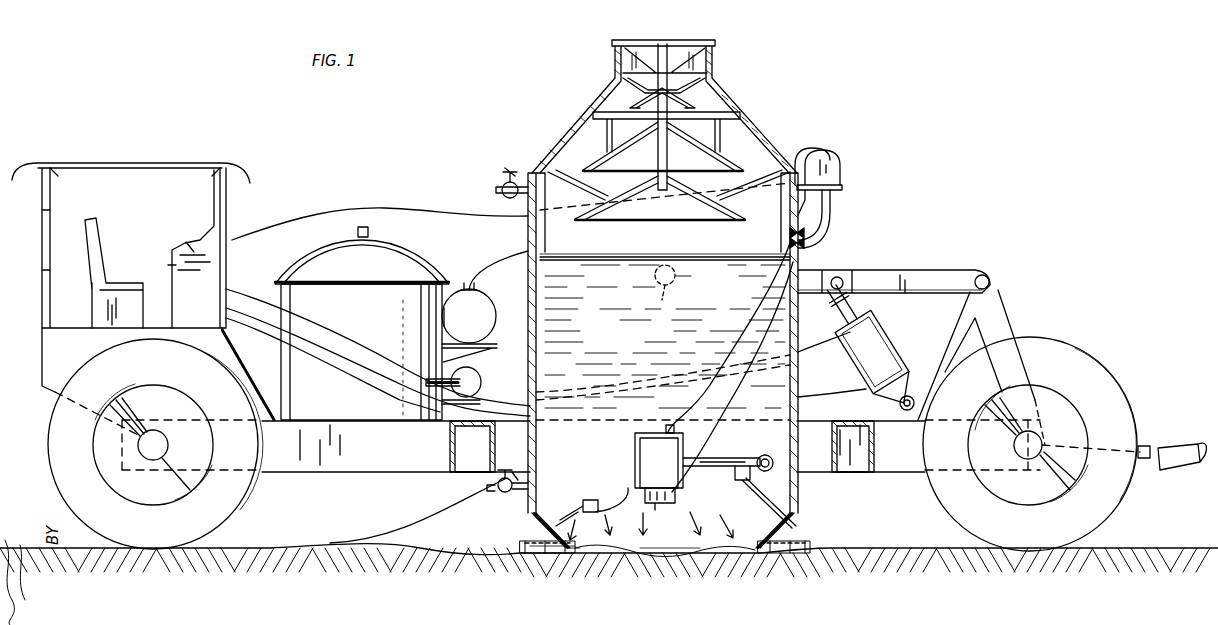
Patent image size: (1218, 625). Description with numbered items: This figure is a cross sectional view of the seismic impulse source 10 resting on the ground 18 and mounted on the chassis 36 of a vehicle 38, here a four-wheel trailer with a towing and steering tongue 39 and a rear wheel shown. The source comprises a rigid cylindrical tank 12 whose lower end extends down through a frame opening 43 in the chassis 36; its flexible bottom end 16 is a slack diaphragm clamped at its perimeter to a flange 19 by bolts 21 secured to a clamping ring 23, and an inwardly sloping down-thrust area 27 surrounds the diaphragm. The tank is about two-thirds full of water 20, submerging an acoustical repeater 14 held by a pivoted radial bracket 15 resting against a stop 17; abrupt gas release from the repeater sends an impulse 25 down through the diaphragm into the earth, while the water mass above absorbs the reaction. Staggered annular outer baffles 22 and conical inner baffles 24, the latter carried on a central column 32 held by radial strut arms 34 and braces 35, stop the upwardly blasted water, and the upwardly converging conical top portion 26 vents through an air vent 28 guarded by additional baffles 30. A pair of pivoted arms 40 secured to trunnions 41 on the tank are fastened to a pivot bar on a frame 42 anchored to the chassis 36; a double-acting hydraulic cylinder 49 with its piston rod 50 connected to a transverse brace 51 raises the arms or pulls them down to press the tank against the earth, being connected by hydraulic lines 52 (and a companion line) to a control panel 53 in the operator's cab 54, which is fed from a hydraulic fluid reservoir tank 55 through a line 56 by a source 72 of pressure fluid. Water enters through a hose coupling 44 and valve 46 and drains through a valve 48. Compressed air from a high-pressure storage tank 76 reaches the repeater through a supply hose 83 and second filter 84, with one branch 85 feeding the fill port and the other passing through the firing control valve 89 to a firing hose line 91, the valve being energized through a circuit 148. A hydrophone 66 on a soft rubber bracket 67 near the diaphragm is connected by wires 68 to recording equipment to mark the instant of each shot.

The seismic impulse source 10 is at (802, 90).
The cylindrical tank 12 is at (805, 323).
The acoustical repeater 14 is at (627, 445).
The pivoted radial bracket 15 is at (722, 460).
The bottom end 16 is at (658, 548).
The stop 17 is at (769, 513).
The ground 18 is at (272, 548).
The flange 19 is at (808, 548).
The water 20 is at (665, 257).
The bolts 21 is at (522, 556).
The outer baffles 22 is at (590, 120).
The clamping ring 23 is at (790, 560).
The inner baffles 24 is at (720, 142).
The impulse 25 is at (712, 518).
The conical top portion 26 is at (760, 148).
The down-thrust area 27 is at (540, 522).
The air vent 28 is at (714, 74).
The additional baffles 30 is at (628, 52).
The central column 32 is at (667, 160).
The radial strut arms 34 is at (662, 42).
The braces 35 is at (606, 138).
The chassis 36 is at (322, 473).
The vehicle 38 is at (1058, 304).
The towing and steering tongue 39 is at (1150, 448).
The pivoted arms 40 is at (814, 272).
The trunnions 41 is at (660, 300).
The frame 42 is at (1000, 322).
The frame opening 43 is at (496, 440).
The hose coupling 44 is at (494, 190).
The valve 46 is at (508, 172).
The valve 48 is at (503, 495).
The double-acting hydraulic cylinder 49 is at (880, 342).
The piston rod 50 is at (842, 306).
The transverse brace 51 is at (860, 270).
The hydraulic line 52 is at (258, 348).
The control panel 53 is at (188, 244).
The operator's cab 54 is at (164, 156).
The hydraulic fluid reservoir tank 55 is at (483, 386).
The line 56 is at (355, 356).
The hydrophone 66 is at (591, 502).
The soft rubber bracket 67 is at (575, 550).
The wires 68 is at (428, 512).
The source of pressure fluid 72 is at (420, 258).
The high-pressure storage tank 76 is at (482, 322).
The flexible high-pressure fluid supply hose 83 is at (505, 262).
The second filter 84 is at (812, 150).
The branch 85 is at (831, 222).
The firing control valve 89 is at (842, 172).
The firing hose line 91 is at (820, 210).
The circuit 148 is at (370, 210).